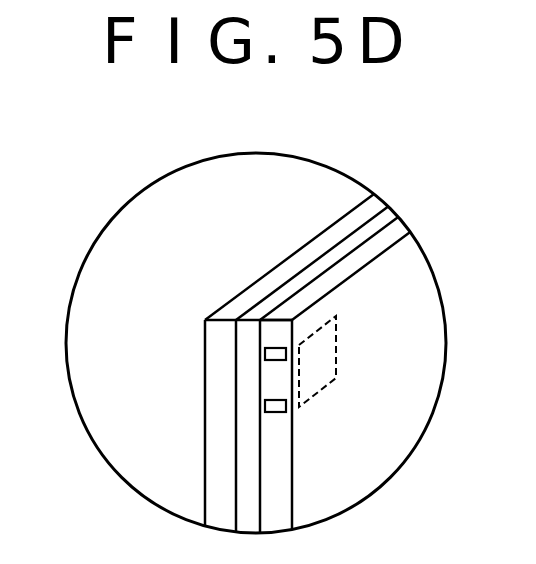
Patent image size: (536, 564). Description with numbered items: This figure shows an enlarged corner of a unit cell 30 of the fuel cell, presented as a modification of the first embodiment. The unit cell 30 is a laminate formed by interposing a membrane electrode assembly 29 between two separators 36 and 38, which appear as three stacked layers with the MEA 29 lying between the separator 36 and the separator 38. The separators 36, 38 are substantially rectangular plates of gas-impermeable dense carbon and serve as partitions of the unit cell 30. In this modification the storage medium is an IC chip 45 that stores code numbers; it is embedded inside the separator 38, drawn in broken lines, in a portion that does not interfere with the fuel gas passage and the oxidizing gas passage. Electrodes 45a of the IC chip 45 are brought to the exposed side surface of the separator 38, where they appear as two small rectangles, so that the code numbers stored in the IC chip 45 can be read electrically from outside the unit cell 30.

The unit cell 30 is at (316, 228).
The separator 36 is at (297, 257).
The membrane electrode assembly 29 is at (288, 287).
The separator 38 is at (288, 312).
The IC chip 45 is at (312, 371).
The electrodes 45a is at (265, 353).